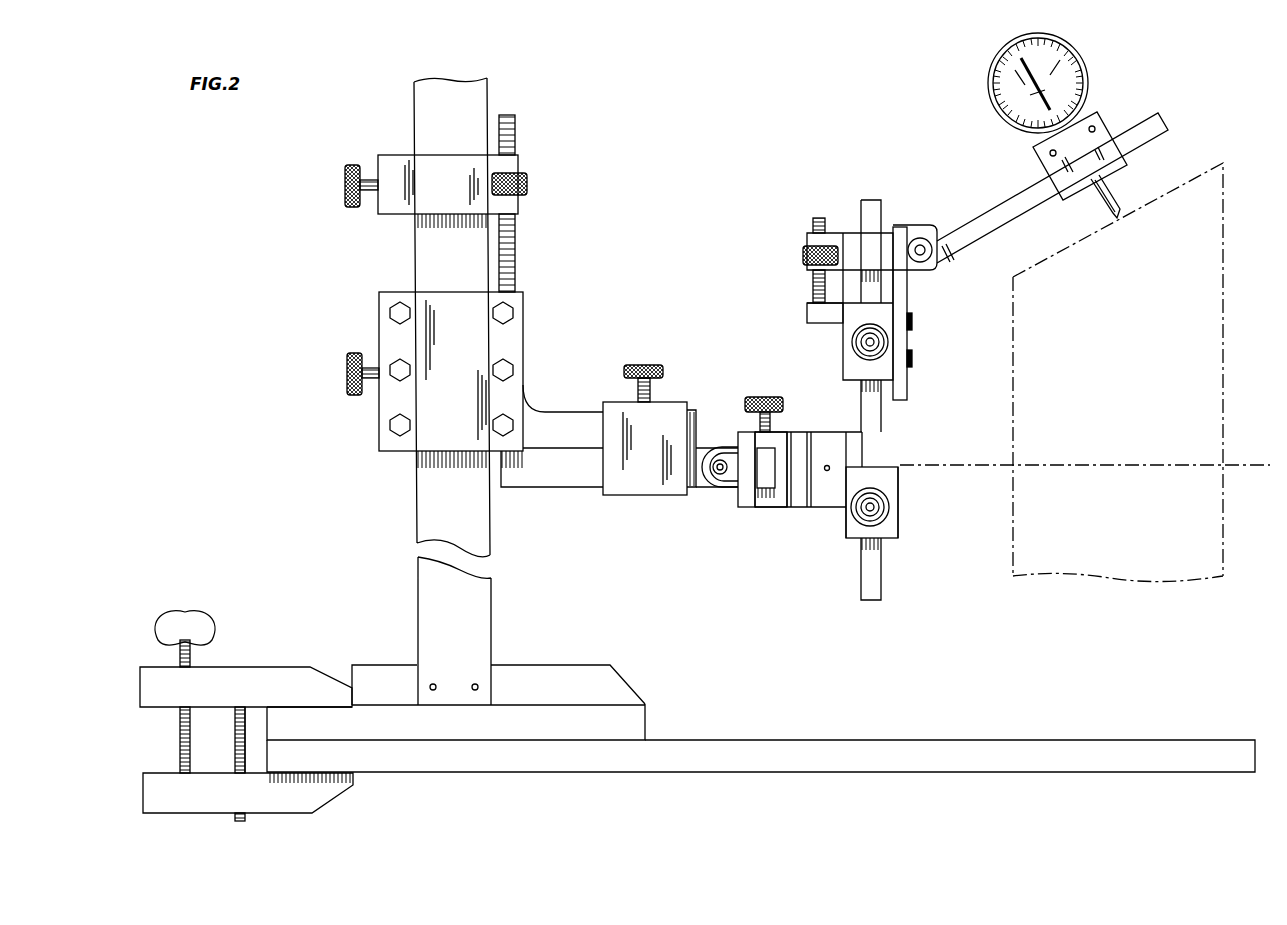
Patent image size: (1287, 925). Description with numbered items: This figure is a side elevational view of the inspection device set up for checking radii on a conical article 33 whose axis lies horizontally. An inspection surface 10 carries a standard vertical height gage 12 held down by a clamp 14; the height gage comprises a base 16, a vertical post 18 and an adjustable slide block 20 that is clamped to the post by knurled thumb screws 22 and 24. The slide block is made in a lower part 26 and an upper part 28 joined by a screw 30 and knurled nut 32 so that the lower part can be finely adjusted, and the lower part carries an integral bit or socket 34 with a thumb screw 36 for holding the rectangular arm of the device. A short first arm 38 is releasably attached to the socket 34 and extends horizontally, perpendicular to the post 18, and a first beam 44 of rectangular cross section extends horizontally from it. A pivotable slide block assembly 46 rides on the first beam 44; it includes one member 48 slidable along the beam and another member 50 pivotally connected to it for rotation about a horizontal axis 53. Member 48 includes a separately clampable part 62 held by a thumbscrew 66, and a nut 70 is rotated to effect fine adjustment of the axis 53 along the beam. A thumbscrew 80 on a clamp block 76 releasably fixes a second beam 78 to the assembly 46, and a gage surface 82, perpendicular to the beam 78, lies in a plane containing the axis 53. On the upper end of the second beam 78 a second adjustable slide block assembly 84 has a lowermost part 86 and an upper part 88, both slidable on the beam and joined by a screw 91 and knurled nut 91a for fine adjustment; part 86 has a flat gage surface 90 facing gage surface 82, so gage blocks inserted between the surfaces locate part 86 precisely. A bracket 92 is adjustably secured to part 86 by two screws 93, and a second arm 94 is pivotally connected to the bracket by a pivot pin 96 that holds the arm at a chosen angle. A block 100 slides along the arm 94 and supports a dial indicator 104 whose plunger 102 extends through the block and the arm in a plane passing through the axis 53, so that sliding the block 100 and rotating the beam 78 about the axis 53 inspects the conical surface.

The inspection surface 10 is at (800, 740).
The vertical height gage 12 is at (668, 706).
The clamp 14 is at (253, 667).
The base 16 is at (645, 724).
The vertical post 18 is at (412, 118).
The adjustable slide block 20 is at (558, 347).
The knurled thumb screw 22 is at (347, 380).
The knurled thumb screw 24 is at (345, 192).
The lower part of slide block 26 is at (456, 420).
The upper part of slide block 28 is at (455, 198).
The screw 30 is at (518, 245).
The knurled nut 32 is at (528, 187).
The conical article 33 is at (1225, 215).
The bit or socket 34 is at (607, 402).
The thumb screw 36 is at (643, 365).
The first arm 38 is at (585, 487).
The first beam 44 is at (766, 507).
The pivotable slide block assembly 46 is at (798, 403).
The member 48 is at (795, 507).
The member 50 is at (847, 432).
The pivot axis 53 is at (1082, 465).
The part 62 is at (742, 434).
The thumbscrew 66 is at (770, 397).
The nut 70 is at (705, 492).
The clamp block 76 is at (846, 540).
The second beam 78 is at (861, 590).
The thumbscrew 80 is at (900, 507).
The gage surface 82 is at (895, 468).
The second adjustable slide block assembly 84 is at (778, 216).
The lowermost part 86 is at (807, 314).
The part 88 is at (807, 241).
The gage surface 90 is at (862, 388).
The screw 91 is at (813, 289).
The knurled nut 91a is at (803, 256).
The bracket 92 is at (907, 305).
The screws 93 is at (912, 355).
The second arm 94 is at (975, 218).
The pivot pin 96 is at (915, 238).
The block 100 is at (1035, 162).
The plunger 102 is at (1112, 195).
The dial indicator 104 is at (1088, 78).